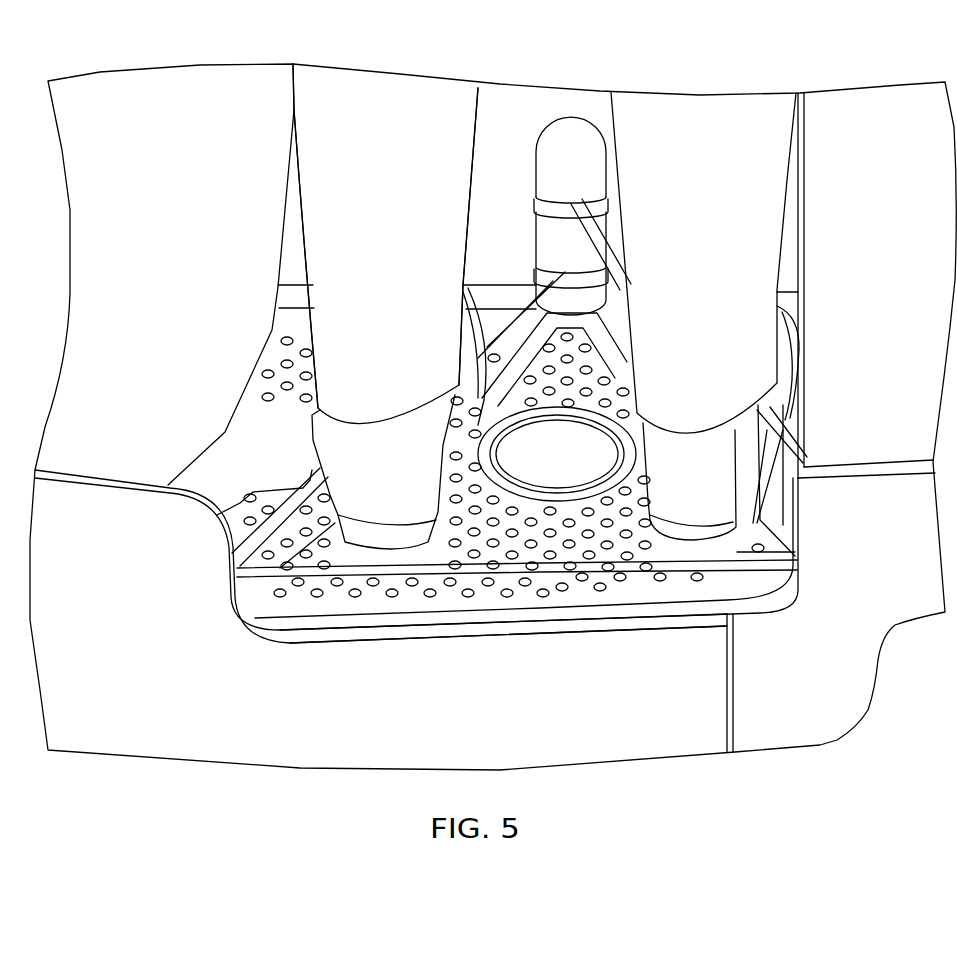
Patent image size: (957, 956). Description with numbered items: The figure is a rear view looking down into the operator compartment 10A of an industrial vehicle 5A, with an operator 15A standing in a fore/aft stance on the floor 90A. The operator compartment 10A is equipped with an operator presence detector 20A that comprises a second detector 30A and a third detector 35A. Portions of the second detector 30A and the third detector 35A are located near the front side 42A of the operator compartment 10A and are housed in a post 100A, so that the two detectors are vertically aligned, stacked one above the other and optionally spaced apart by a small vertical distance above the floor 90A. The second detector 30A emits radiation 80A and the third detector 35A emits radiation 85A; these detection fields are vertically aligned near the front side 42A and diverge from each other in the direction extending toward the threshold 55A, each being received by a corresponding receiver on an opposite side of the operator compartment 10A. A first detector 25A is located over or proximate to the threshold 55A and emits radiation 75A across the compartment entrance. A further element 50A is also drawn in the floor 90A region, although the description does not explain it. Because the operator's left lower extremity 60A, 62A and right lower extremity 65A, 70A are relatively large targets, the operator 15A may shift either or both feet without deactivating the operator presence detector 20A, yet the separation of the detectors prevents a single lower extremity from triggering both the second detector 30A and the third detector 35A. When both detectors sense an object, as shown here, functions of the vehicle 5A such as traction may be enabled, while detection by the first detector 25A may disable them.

The vehicle 5A is at (88, 218).
The operator compartment 10A is at (228, 462).
The operator 15A is at (390, 92).
The operator presence detector 20A is at (524, 120).
The first detector 25A is at (258, 590).
The second detector 30A is at (604, 280).
The third detector 35A is at (577, 198).
The front side 42A is at (505, 100).
The drain opening 50A is at (595, 445).
The threshold 55A is at (505, 637).
The left lower extremity 60A is at (386, 442).
The left lower extremity 62A is at (315, 140).
The right lower extremity 65A is at (705, 112).
The right lower extremity 70A is at (715, 466).
The radiation 75A is at (547, 567).
The radiation 80A is at (248, 537).
The radiation 85A is at (603, 229).
The floor 90A is at (513, 542).
The post 100A is at (572, 133).